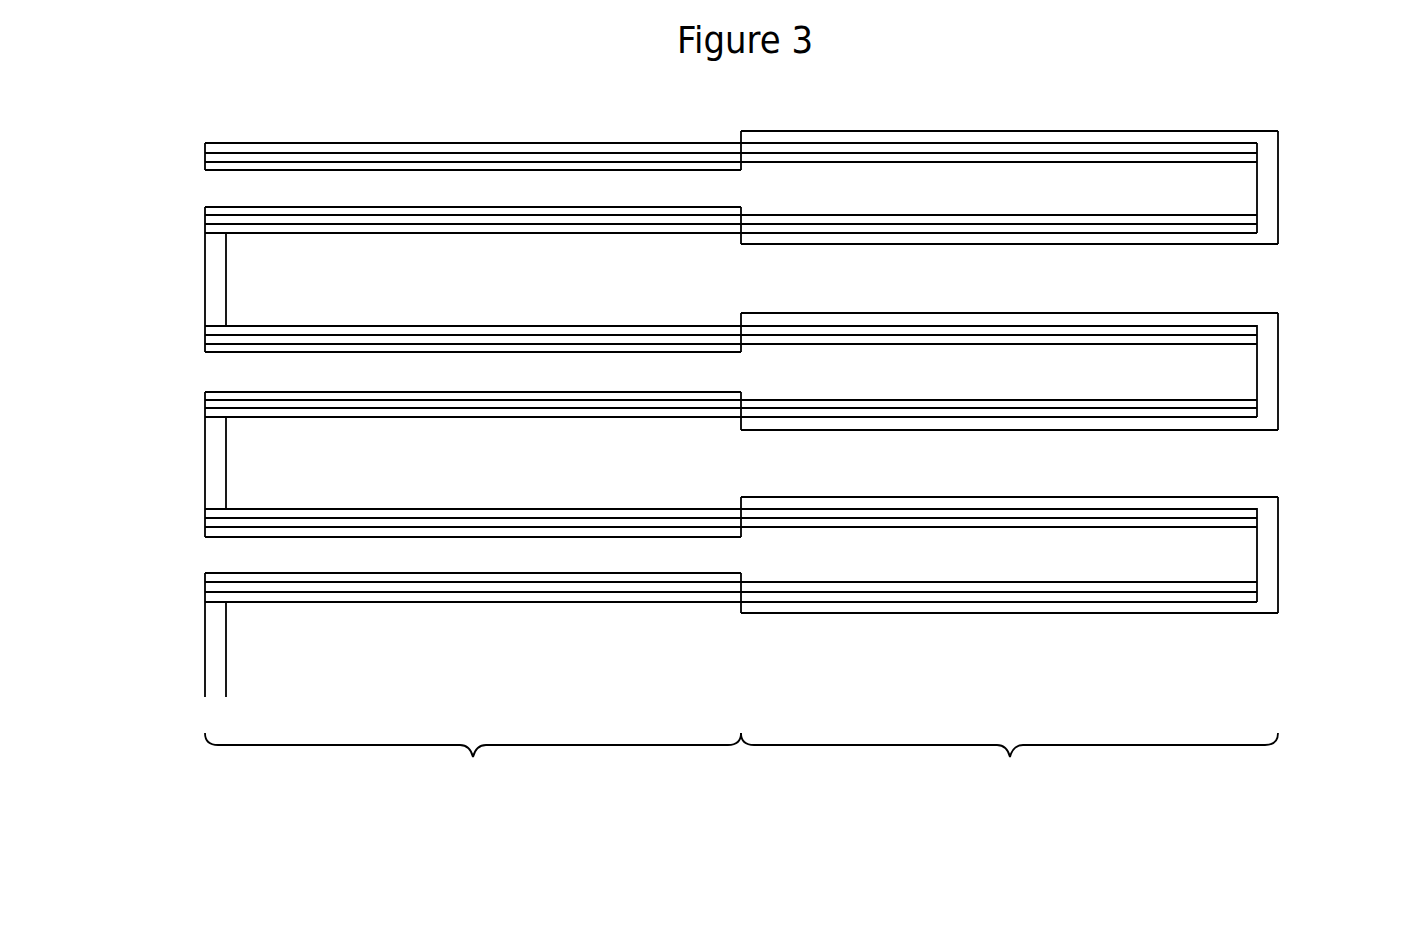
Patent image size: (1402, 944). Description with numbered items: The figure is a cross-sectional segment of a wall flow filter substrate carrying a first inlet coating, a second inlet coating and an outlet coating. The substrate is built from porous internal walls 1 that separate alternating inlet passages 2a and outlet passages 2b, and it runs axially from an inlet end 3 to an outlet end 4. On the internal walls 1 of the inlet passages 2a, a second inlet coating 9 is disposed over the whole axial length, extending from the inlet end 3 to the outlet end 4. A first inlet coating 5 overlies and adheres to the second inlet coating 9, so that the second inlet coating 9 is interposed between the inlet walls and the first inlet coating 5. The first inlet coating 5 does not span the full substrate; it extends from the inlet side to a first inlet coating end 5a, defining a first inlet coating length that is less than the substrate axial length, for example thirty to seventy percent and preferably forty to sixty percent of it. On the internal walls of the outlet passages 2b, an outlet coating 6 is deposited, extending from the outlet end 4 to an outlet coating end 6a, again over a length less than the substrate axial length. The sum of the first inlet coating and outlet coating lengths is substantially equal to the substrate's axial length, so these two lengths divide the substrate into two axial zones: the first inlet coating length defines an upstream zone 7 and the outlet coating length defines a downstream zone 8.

The internal walls 1 is at (1223, 527).
The inlet passages 2a is at (247, 192).
The outlet passages 2b is at (1213, 463).
The inlet end 3 is at (205, 467).
The outlet end 4 is at (1278, 533).
The first inlet coating 5 is at (230, 535).
The first inlet coating end 5a is at (741, 170).
The outlet coating 6 is at (1223, 503).
The outlet coating end 6a is at (743, 245).
The upstream zone 7 is at (473, 782).
The downstream zone 8 is at (1009, 782).
The second inlet coating 9 is at (212, 527).